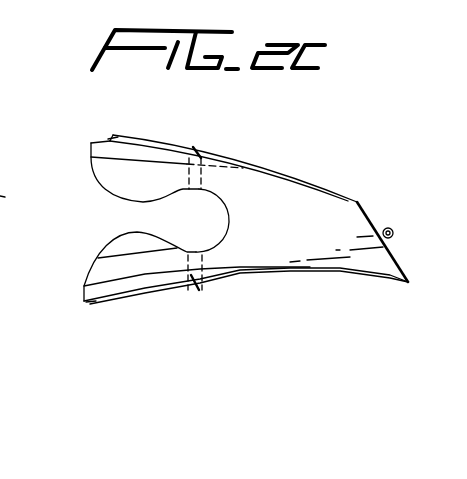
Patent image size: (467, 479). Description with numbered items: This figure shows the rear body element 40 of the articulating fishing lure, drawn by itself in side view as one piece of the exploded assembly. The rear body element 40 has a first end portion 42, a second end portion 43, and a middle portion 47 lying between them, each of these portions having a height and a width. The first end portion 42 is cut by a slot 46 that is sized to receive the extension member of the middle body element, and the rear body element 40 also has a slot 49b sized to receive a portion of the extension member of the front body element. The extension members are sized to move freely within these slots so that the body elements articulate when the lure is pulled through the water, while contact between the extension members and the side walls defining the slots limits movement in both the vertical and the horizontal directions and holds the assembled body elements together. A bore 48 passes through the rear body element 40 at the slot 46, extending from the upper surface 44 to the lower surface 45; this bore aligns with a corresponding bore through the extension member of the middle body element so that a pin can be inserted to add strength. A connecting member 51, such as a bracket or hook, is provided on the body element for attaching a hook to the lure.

The rear body element 40 is at (230, 230).
The first end portion 42 is at (92, 172).
The second end portion 43 is at (400, 258).
The upper surface 44 is at (140, 137).
The lower surface 45 is at (156, 303).
The slot 46 is at (96, 215).
The middle portion 47 is at (246, 266).
The bore 48 is at (198, 148).
The slot 49b is at (101, 128).
The connecting member 51 is at (395, 223).